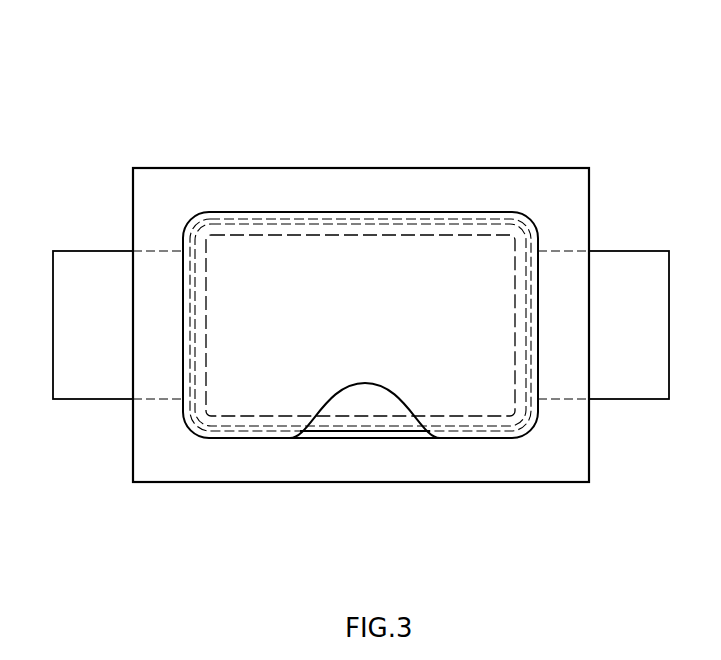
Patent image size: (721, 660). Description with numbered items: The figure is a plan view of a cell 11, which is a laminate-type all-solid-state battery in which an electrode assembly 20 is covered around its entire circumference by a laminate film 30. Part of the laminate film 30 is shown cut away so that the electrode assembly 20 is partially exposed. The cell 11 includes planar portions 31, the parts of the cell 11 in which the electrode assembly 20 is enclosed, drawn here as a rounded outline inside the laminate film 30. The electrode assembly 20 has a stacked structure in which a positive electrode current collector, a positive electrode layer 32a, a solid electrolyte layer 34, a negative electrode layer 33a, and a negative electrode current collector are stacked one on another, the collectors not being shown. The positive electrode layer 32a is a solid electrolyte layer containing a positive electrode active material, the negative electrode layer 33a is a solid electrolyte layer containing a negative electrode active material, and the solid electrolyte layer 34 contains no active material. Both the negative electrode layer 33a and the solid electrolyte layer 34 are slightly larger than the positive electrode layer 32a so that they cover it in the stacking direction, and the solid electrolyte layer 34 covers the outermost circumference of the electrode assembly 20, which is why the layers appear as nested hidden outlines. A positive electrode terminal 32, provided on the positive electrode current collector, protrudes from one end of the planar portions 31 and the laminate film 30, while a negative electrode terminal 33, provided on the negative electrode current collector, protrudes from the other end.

The cell 11 is at (198, 88).
The electrode assembly 20 is at (397, 433).
The laminate film 30 is at (542, 185).
The planar portions 31 is at (463, 213).
The positive electrode terminal 32 is at (87, 250).
The positive electrode layer 32a is at (386, 234).
The negative electrode terminal 33 is at (622, 250).
The negative electrode layer 33a is at (294, 224).
The solid electrolyte layer 34 is at (345, 431).